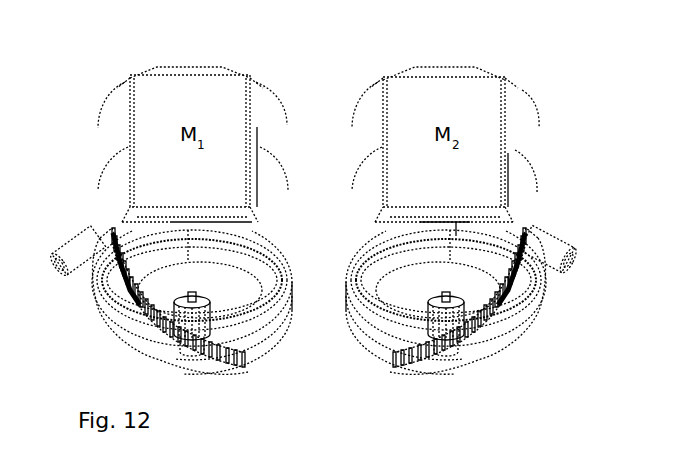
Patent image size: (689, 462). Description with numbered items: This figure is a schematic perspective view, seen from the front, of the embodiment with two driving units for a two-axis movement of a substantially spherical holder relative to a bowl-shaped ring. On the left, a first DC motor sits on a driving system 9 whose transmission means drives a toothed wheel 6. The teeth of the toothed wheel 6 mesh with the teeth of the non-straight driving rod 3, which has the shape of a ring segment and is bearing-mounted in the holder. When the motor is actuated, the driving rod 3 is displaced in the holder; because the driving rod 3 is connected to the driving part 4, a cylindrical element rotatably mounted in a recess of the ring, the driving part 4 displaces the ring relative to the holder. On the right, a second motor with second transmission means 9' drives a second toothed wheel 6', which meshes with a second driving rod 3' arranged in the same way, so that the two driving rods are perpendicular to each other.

The driving rod 3 is at (153, 301).
The driving part 4 is at (70, 245).
The toothed wheel 6 is at (237, 331).
The driving system 9 is at (203, 302).
The second driving rod 3' is at (467, 301).
The second toothed wheel 6' is at (450, 352).
The second transmission means 9' is at (461, 302).